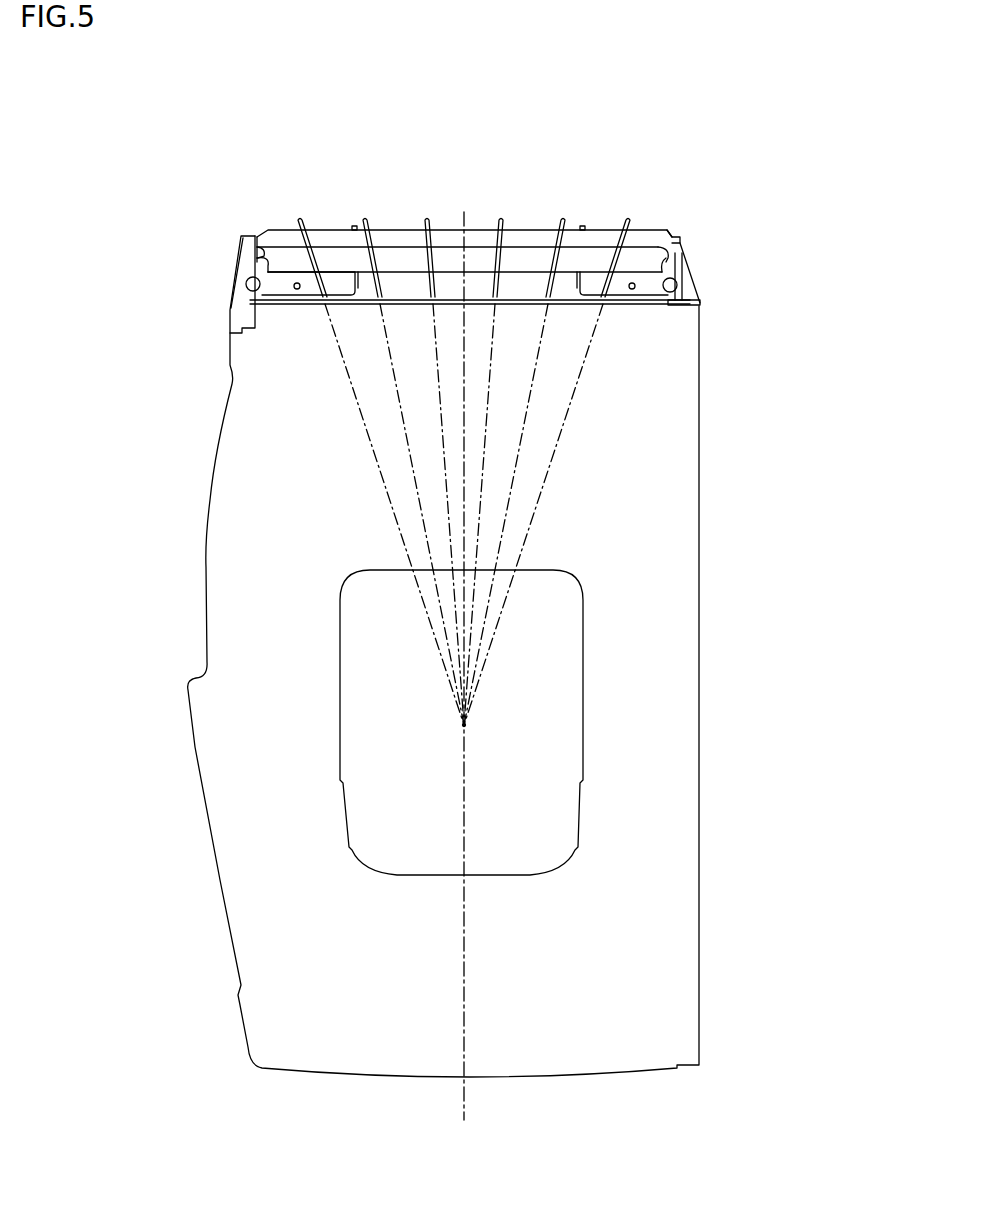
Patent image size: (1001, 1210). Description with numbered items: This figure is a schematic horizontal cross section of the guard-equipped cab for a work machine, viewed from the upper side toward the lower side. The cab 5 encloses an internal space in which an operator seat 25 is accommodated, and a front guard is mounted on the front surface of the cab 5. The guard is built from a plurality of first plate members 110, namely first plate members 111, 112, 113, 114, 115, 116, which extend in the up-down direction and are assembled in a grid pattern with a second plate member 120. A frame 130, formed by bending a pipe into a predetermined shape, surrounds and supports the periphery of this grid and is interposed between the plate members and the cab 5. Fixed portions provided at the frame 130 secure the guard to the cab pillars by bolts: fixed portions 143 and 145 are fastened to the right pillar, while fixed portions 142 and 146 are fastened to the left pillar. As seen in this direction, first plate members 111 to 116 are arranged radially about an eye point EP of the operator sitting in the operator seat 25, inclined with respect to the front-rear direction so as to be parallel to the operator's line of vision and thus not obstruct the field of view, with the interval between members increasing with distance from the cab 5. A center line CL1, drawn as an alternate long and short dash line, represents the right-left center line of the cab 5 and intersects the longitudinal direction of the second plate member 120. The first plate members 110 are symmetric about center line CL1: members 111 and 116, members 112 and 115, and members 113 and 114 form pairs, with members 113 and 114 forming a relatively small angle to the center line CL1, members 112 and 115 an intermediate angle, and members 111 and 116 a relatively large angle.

The cab for the work machine 5 is at (660, 590).
The operator seat 25 is at (398, 768).
The first plate members 110 is at (635, 168).
The first plate member 111 is at (627, 221).
The first plate member 112 is at (563, 221).
The first plate member 113 is at (500, 221).
The first plate member 114 is at (428, 221).
The first plate member 115 is at (365, 221).
The first plate member 116 is at (300, 221).
The second plate member 120 is at (638, 242).
The frame 130 is at (280, 283).
The fixed portion 142 is at (246, 309).
The fixed portion 143 is at (692, 296).
The fixed portion 145 is at (645, 275).
The fixed portion 146 is at (258, 250).
The eye point EP is at (465, 725).
The center line CL1 is at (465, 1098).